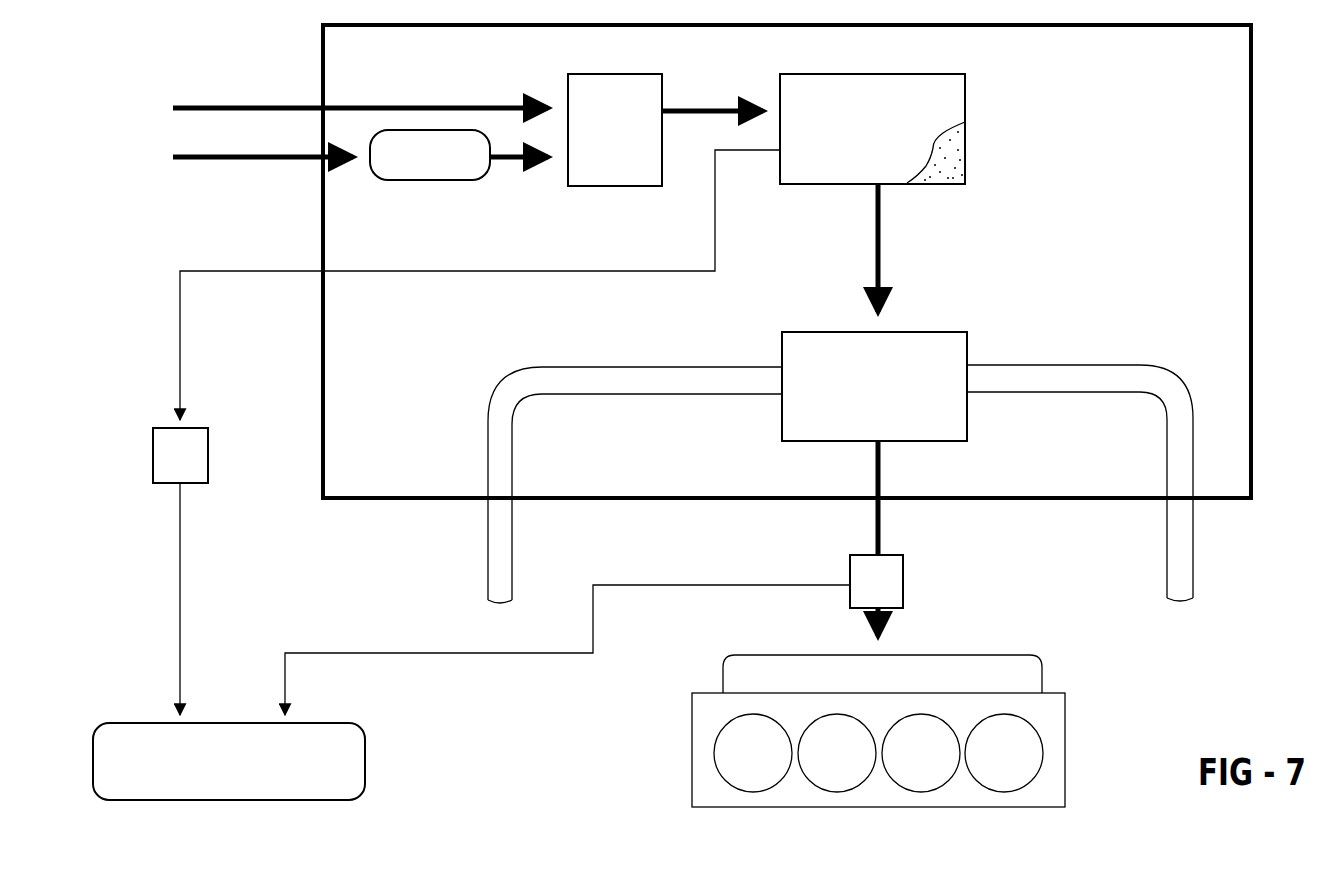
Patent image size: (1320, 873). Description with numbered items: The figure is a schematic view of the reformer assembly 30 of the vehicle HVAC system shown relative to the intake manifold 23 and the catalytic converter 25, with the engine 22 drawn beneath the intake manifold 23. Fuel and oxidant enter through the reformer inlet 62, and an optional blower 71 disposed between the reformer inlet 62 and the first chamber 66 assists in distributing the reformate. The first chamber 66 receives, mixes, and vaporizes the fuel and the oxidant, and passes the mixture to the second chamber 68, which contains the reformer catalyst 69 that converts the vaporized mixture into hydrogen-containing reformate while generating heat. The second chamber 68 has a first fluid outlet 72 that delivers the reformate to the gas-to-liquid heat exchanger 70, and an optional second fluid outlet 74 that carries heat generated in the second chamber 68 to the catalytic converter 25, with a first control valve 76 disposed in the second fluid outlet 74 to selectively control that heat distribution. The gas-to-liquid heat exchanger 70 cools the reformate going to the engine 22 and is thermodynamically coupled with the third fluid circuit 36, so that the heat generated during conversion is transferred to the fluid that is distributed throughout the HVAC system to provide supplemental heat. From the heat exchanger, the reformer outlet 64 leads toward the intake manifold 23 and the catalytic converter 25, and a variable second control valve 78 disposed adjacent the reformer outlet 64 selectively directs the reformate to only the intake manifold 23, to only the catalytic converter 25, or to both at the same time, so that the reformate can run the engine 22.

The engine 22 is at (692, 766).
The intake manifold 23 is at (1028, 655).
The catalytic converter 25 is at (229, 761).
The reformer assembly 30 is at (1252, 145).
The third fluid circuit 36 is at (1087, 364).
The reformer inlet 62 is at (322, 104).
The reformer outlet 64 is at (875, 503).
The first chamber 66 is at (665, 130).
The second chamber 68 is at (872, 129).
The reformer catalyst 69 is at (950, 157).
The gas-to-liquid heat exchanger 70 is at (874, 386).
The blower 71 is at (459, 155).
The first fluid outlet 72 is at (882, 190).
The second fluid outlet 74 is at (778, 152).
The first control valve 76 is at (180, 571).
The second control valve 78 is at (594, 635).